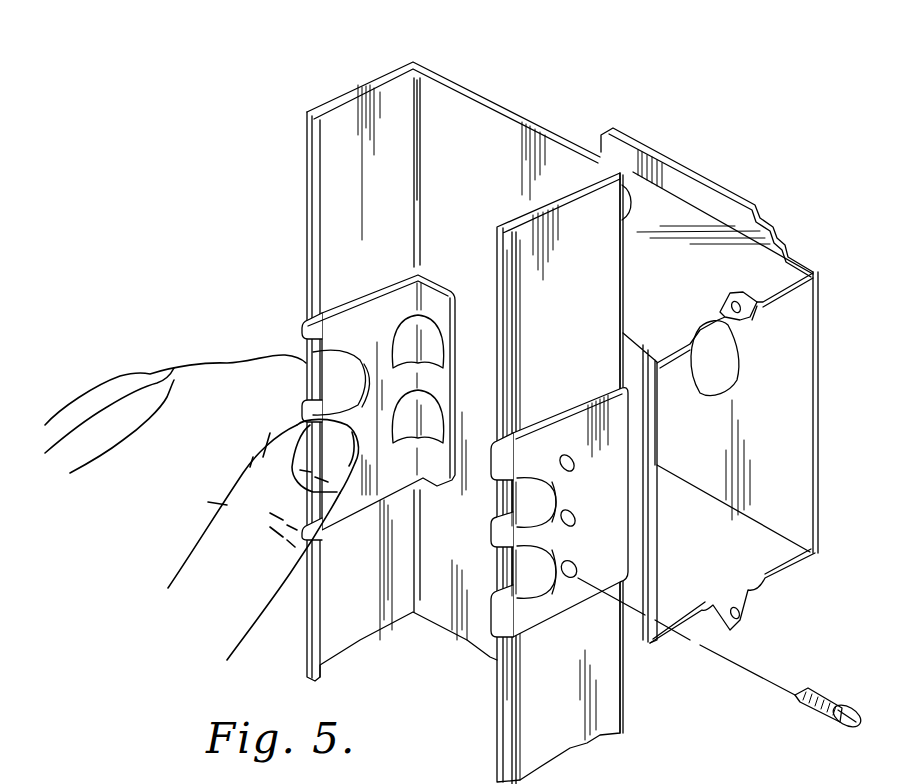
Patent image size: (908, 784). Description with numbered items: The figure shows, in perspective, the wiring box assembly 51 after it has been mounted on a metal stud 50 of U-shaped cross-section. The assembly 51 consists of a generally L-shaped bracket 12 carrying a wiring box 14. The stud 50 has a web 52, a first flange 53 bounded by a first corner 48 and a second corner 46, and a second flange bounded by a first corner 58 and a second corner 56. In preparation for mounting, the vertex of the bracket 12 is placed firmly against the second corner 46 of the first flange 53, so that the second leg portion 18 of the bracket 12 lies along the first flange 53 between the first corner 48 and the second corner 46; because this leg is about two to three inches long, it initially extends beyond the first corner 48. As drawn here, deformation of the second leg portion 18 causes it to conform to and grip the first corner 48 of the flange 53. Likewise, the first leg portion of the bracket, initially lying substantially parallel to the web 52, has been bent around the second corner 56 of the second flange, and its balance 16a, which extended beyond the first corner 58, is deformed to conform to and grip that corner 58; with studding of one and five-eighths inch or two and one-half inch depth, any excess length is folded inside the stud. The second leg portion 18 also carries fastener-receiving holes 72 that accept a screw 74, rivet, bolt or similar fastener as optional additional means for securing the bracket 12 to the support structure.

The bracket 12 is at (552, 610).
The wiring box 14 is at (817, 350).
The balance of the first leg portion 16a is at (386, 337).
The second leg portion 18 is at (610, 490).
The second corner 46 is at (623, 263).
The first corner 48 is at (500, 257).
The stud 50 is at (508, 105).
The wiring box assembly 51 is at (733, 178).
The web 52 is at (492, 180).
The first flange 53 is at (594, 309).
The second corner 56 is at (414, 150).
The first corner 58 is at (308, 153).
The fastener-receiving holes 72 is at (577, 557).
The screw 74 is at (823, 700).